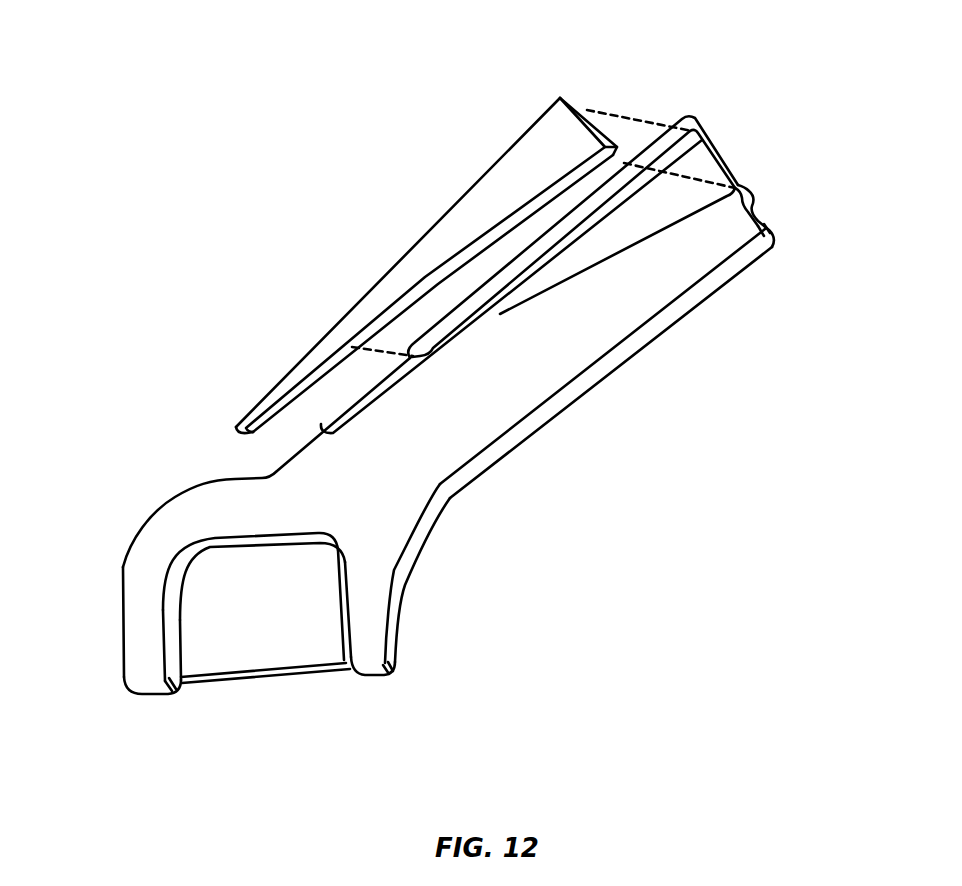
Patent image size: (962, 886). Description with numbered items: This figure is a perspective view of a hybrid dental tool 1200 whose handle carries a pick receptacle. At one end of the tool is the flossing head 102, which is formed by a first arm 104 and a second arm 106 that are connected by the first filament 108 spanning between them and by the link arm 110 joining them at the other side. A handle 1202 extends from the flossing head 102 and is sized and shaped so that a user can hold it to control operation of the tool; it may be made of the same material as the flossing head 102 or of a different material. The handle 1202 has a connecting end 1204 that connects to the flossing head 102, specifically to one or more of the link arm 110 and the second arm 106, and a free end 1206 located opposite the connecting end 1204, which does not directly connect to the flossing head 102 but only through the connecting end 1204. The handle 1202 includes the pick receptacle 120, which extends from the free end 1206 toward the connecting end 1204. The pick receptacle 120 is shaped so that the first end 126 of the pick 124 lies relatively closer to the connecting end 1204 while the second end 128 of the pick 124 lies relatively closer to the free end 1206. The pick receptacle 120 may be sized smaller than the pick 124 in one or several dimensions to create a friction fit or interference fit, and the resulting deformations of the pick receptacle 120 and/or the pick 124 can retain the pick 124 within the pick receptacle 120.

The flossing head 102 is at (144, 527).
The first arm 104 is at (123, 637).
The second arm 106 is at (397, 610).
The first filament 108 is at (304, 673).
The link arm 110 is at (221, 480).
The pick receptacle 120 is at (707, 160).
The pick 124 is at (467, 190).
The first end 126 is at (233, 430).
The second end 128 is at (583, 118).
The hybrid dental tool 1200 is at (818, 68).
The handle 1202 is at (610, 373).
The connecting end 1204 is at (435, 535).
The free end 1206 is at (787, 200).